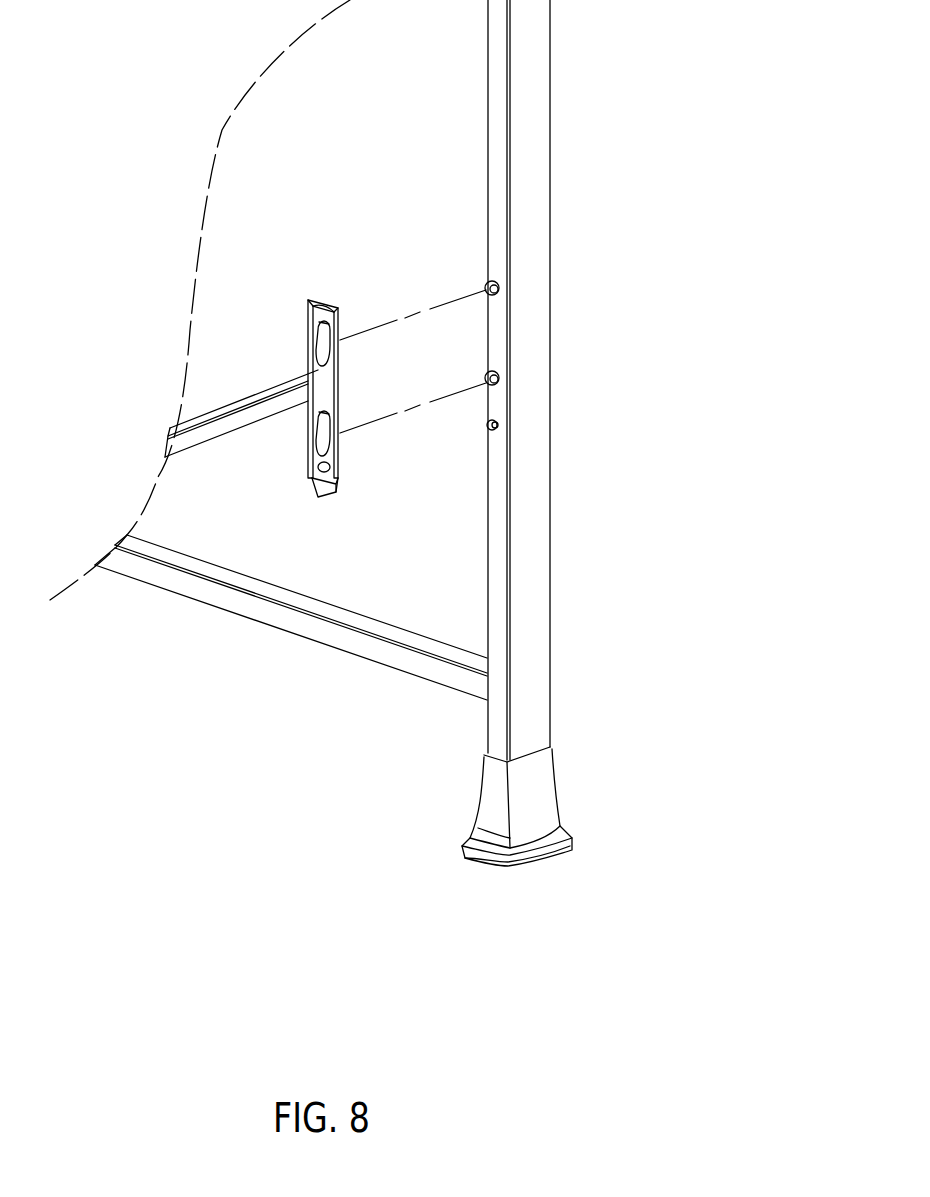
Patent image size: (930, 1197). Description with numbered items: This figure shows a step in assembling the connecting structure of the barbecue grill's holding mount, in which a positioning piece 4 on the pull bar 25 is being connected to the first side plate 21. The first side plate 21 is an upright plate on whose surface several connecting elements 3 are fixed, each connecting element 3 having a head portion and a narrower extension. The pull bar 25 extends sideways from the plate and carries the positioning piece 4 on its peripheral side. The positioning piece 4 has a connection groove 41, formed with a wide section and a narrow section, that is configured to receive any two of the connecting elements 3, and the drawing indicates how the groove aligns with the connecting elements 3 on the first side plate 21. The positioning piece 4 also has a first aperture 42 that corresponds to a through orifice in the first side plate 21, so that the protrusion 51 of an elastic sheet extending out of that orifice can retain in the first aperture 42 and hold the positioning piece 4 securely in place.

The first side plate 21 is at (550, 261).
The connecting element 3 is at (488, 287).
The positioning piece 4 is at (283, 342).
The connection groove 41 is at (318, 334).
The first aperture 42 is at (325, 467).
The pull bar 25 is at (238, 404).
The protrusion 51 is at (487, 426).